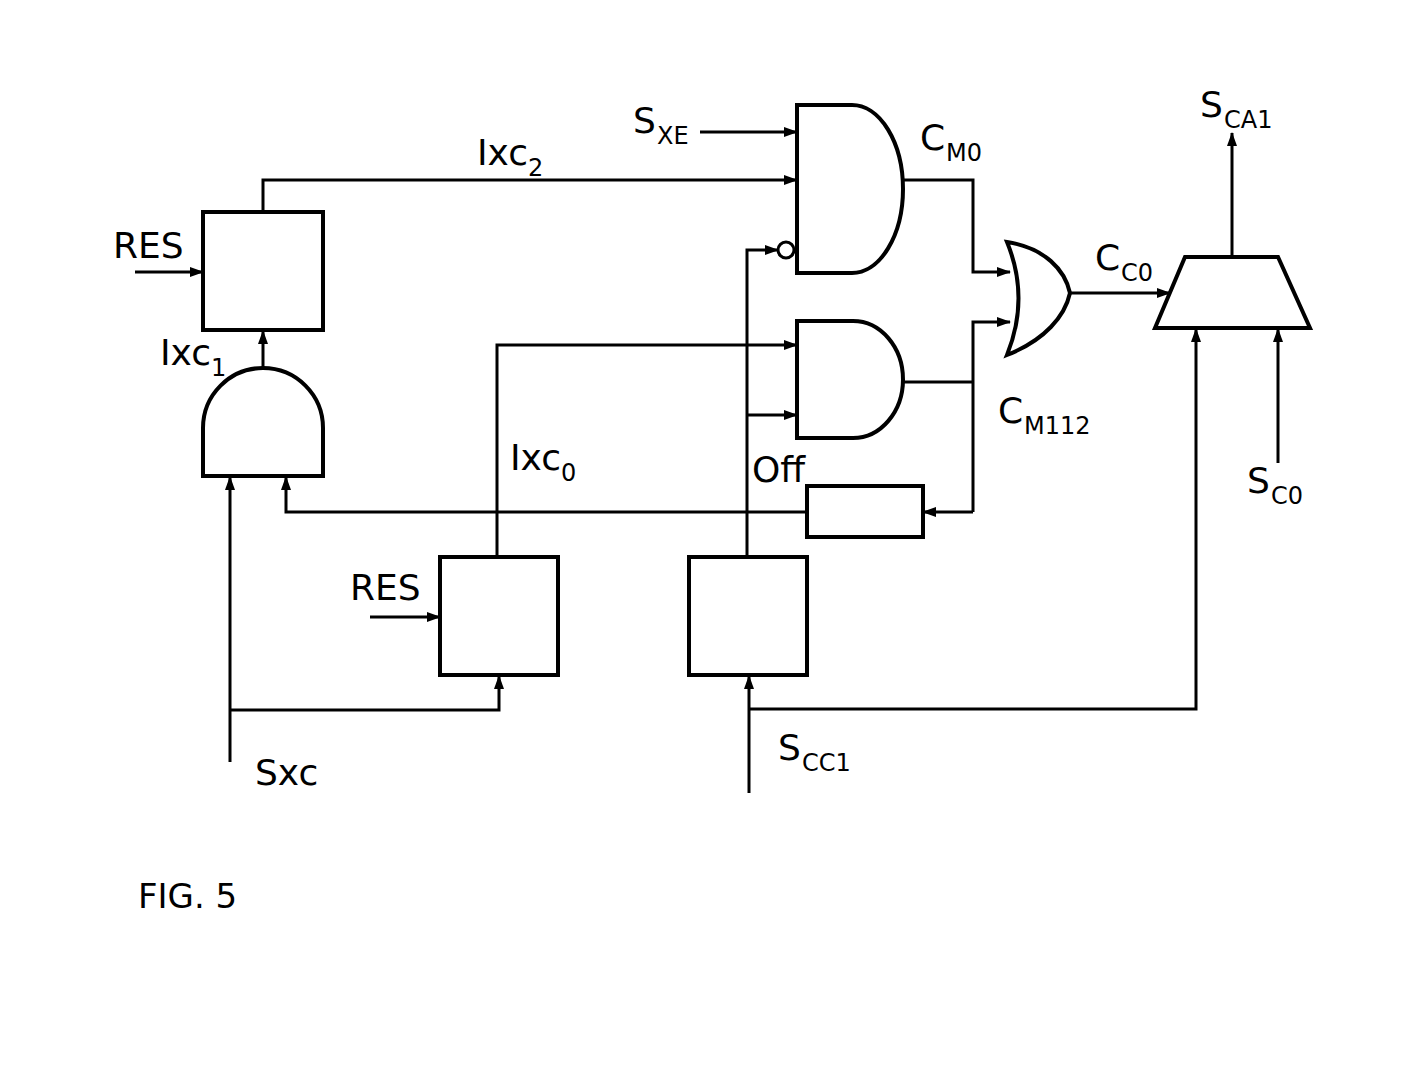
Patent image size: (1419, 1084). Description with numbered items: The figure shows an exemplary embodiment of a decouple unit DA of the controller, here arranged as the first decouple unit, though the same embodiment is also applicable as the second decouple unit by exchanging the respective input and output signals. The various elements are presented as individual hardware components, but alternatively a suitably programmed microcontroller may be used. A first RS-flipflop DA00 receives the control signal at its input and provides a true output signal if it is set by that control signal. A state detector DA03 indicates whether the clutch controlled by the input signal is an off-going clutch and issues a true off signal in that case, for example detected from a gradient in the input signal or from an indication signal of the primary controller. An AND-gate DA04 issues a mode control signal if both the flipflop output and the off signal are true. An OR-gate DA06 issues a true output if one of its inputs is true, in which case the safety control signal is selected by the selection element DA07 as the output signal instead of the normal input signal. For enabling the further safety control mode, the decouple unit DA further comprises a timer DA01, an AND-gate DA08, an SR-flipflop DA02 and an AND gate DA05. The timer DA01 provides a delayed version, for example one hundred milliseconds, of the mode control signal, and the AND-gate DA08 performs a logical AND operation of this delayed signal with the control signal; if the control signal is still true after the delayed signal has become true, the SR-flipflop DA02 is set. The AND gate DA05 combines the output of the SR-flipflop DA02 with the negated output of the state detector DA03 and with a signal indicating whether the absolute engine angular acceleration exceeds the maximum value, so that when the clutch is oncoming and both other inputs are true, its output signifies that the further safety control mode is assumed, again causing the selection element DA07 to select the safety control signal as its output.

The first RS-flipflop DA00 is at (499, 616).
The timer DA01 is at (865, 511).
The SR-flipflop DA02 is at (263, 271).
The state detector DA03 is at (748, 616).
The AND-gate DA04 is at (850, 379).
The AND gate DA05 is at (840, 189).
The OR-gate DA06 is at (1038, 292).
The selection element DA07 is at (1232, 292).
The AND-gate DA08 is at (263, 422).
The decouple unit DA is at (1228, 615).